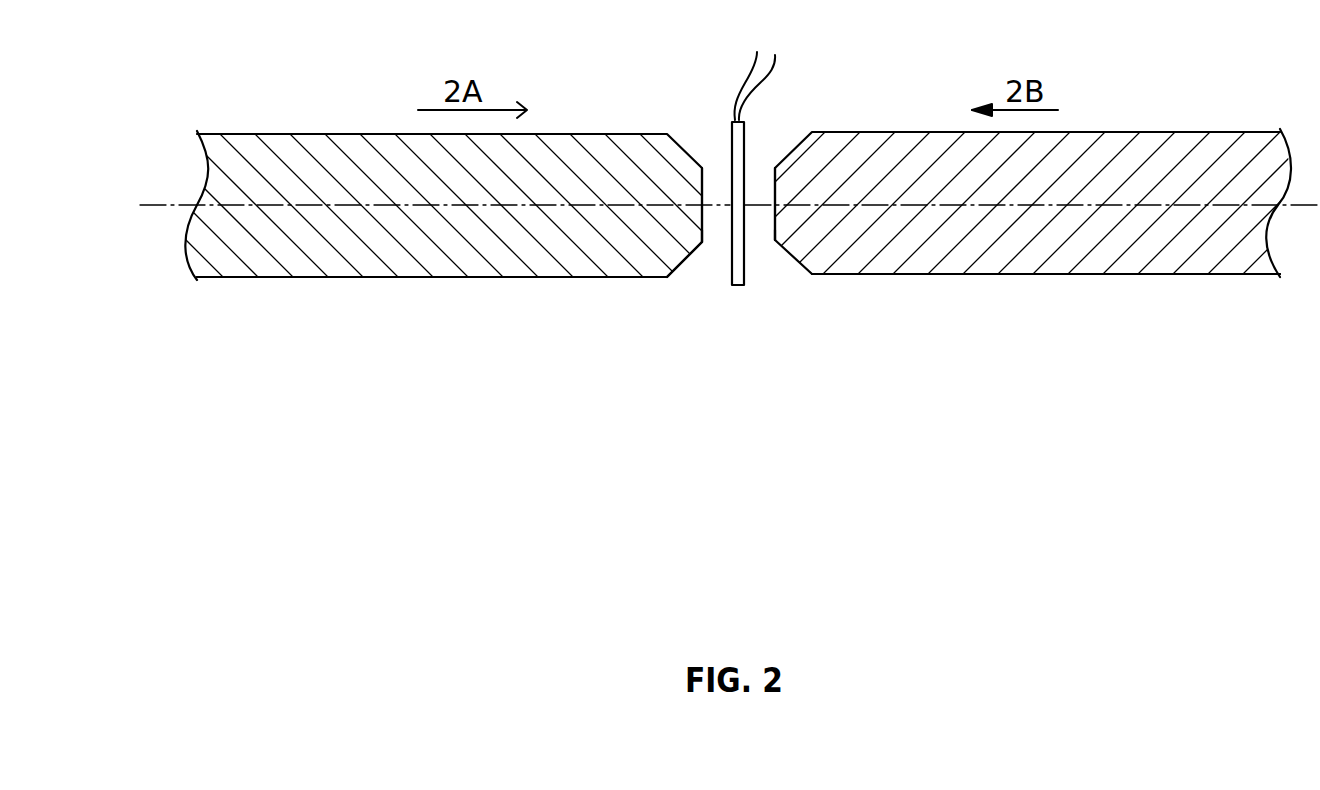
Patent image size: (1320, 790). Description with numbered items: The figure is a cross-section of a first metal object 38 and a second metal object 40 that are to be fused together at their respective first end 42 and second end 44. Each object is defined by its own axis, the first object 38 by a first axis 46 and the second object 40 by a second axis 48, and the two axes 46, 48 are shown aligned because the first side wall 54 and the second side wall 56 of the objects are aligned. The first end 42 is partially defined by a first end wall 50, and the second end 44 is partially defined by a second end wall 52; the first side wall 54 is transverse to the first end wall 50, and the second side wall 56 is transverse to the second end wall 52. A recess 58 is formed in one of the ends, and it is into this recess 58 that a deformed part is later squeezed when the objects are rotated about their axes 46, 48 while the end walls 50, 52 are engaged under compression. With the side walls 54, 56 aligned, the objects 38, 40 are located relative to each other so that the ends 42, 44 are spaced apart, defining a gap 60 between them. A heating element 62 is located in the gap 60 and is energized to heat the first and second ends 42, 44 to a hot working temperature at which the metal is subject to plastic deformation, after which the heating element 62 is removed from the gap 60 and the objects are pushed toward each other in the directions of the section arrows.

The first metal object 38 is at (318, 152).
The second metal object 40 is at (1250, 150).
The first end 42 is at (684, 191).
The second end 44 is at (824, 191).
The first axis 46 is at (297, 207).
The second axis 48 is at (1135, 205).
The first end wall 50 is at (703, 222).
The second end wall 52 is at (777, 226).
The first side wall 54 is at (457, 278).
The second side wall 56 is at (1093, 274).
The recess 58 is at (692, 260).
The gap 60 is at (753, 228).
The heating element 62 is at (740, 138).